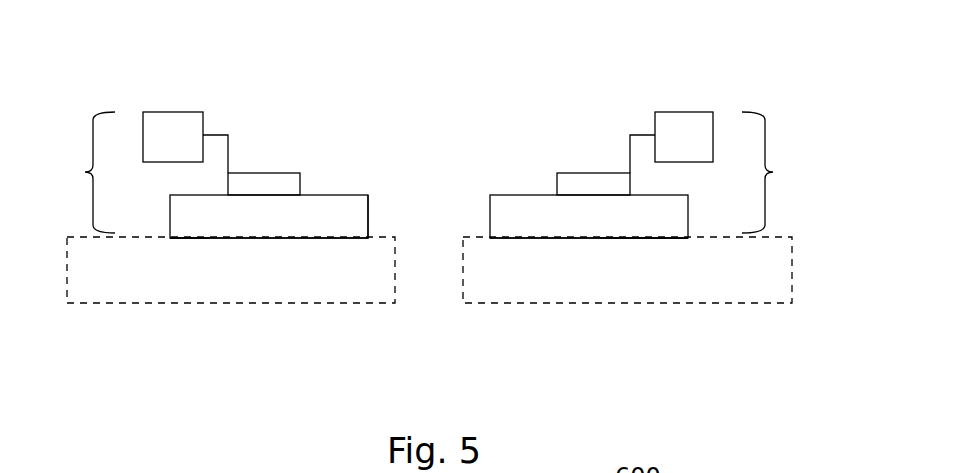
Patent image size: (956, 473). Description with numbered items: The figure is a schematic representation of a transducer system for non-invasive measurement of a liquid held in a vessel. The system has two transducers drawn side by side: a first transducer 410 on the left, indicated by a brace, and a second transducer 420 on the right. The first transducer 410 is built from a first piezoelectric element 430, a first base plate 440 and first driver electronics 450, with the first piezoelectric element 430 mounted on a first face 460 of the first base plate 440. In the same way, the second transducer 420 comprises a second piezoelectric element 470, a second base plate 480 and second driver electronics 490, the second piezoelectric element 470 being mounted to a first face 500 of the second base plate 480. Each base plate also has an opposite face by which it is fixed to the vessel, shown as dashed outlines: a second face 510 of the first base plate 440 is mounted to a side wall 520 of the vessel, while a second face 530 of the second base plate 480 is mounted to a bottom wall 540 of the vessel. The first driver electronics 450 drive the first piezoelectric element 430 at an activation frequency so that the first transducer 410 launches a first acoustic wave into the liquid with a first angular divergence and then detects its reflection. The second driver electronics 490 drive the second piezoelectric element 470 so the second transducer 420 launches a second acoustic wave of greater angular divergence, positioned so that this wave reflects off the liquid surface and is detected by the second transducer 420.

The first transducer 410 is at (71, 172).
The second transducer 420 is at (786, 172).
The first piezoelectric element 430 is at (255, 173).
The first base plate 440 is at (353, 207).
The first driver electronics 450 is at (167, 110).
The first face of the first base plate 460 is at (310, 195).
The second piezoelectric element 470 is at (592, 173).
The second base plate 480 is at (547, 225).
The second driver electronics 490 is at (685, 122).
The first face of the second base plate 500 is at (540, 193).
The second face of the first base plate 510 is at (210, 238).
The side wall of the vessel 520 is at (330, 280).
The second face of the second base plate 530 is at (640, 238).
The bottom wall of the vessel 540 is at (750, 287).